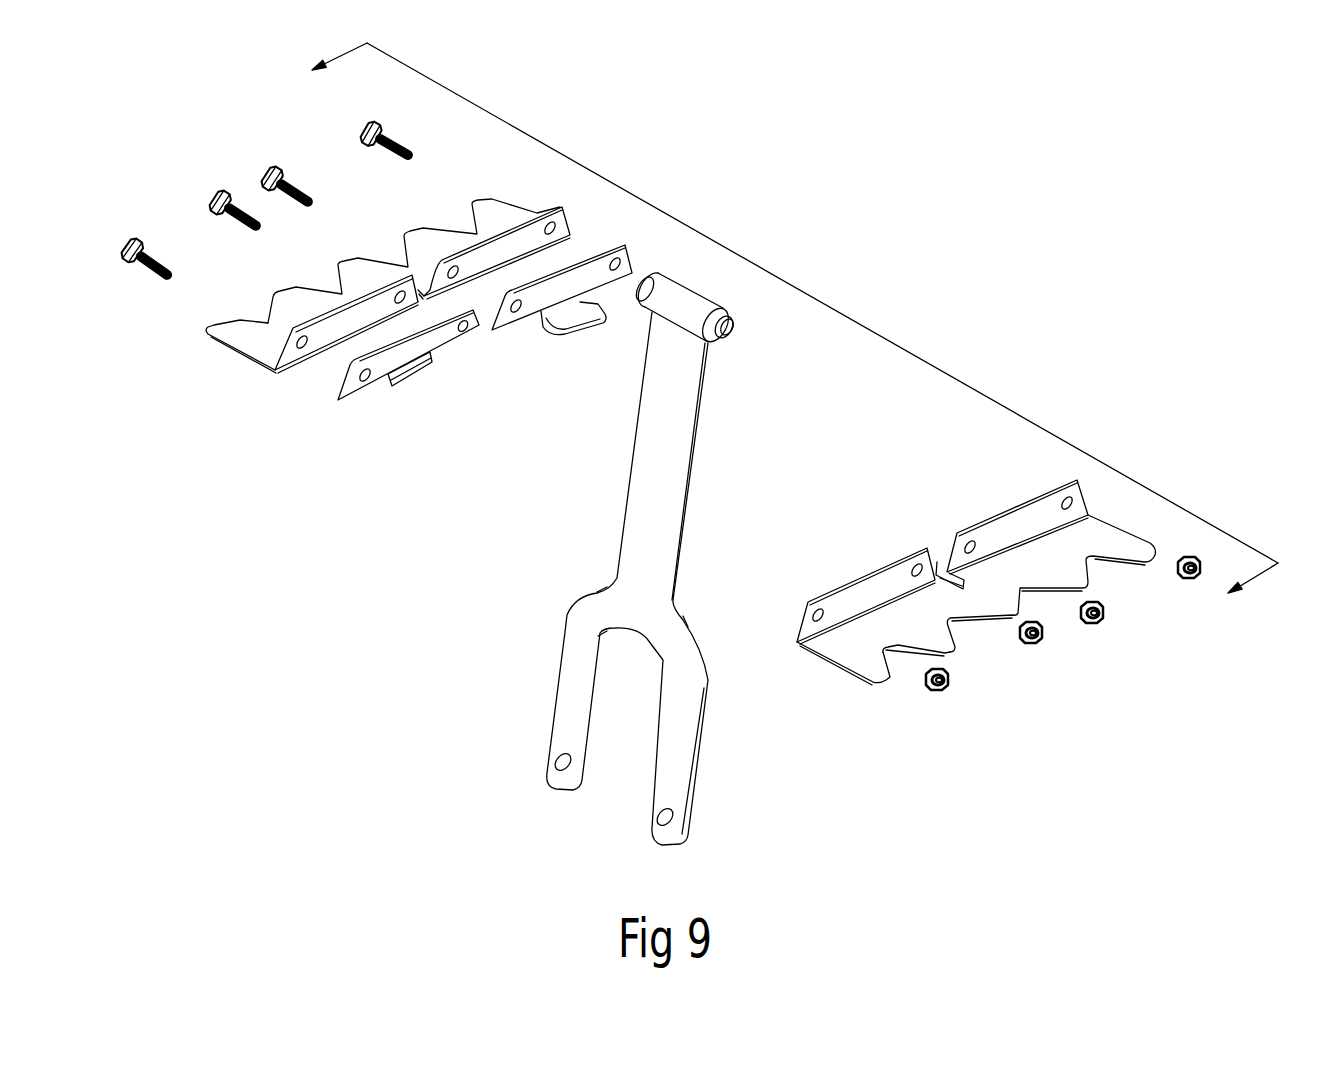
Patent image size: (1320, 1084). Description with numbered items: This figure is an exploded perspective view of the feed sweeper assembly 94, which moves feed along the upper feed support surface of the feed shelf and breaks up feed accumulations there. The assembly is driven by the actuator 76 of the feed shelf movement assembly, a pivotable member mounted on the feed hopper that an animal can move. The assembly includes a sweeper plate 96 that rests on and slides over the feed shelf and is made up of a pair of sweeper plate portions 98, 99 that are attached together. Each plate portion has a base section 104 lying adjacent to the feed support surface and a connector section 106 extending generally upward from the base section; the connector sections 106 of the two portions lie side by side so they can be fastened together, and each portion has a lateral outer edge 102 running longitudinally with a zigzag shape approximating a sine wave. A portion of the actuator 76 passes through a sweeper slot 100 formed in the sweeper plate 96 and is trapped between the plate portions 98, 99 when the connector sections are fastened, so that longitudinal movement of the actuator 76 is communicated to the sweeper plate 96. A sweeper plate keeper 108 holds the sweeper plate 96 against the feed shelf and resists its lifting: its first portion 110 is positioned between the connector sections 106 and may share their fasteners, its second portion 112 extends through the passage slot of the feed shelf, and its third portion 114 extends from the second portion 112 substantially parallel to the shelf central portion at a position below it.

The actuator 76 is at (650, 508).
The feed sweeper assembly 94 is at (806, 292).
The sweeper plate 96 is at (249, 385).
The sweeper plate portion 98 is at (257, 337).
The sweeper plate portion 99 is at (858, 653).
The sweeper slot 100 is at (937, 587).
The lateral outer edge 102 is at (262, 297).
The base section 104 is at (845, 637).
The connector section 106 is at (878, 593).
The sweeper plate keeper 108 is at (410, 400).
The first portion 110 is at (383, 370).
The second portion 112 is at (420, 372).
The third portion 114 is at (577, 318).